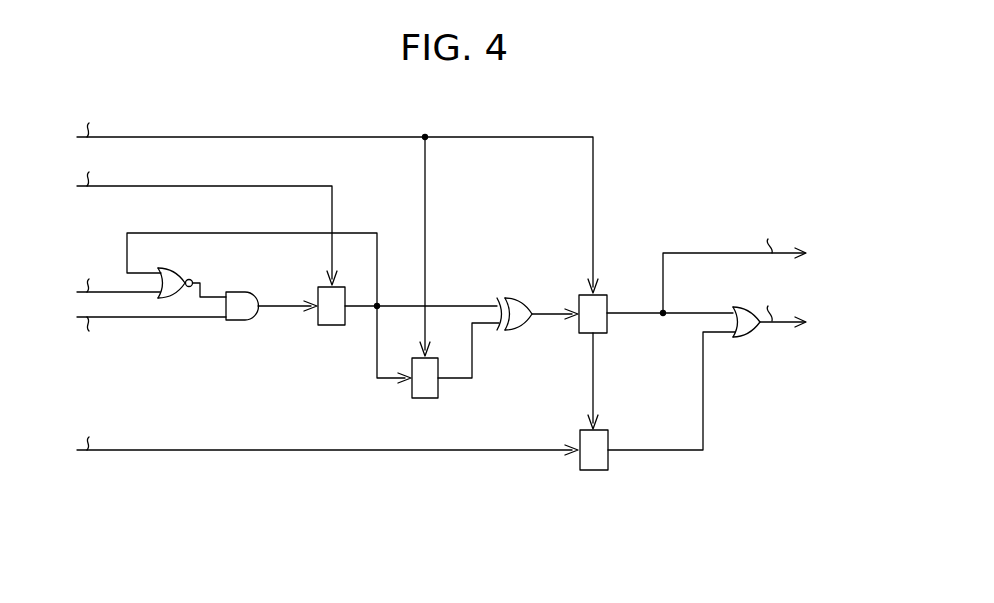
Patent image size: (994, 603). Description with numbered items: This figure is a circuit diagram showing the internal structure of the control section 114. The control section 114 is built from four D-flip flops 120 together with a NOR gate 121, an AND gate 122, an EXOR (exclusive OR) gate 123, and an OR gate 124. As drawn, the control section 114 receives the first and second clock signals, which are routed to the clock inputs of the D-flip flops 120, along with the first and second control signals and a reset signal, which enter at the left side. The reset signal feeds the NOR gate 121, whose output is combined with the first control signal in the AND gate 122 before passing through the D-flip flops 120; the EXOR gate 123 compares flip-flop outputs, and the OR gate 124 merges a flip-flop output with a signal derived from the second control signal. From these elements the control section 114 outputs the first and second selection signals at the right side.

The control section 114 is at (710, 103).
The D-flip flops 120 is at (330, 325).
The NOR gate 121 is at (183, 271).
The AND gate 122 is at (238, 321).
The EXOR gate 123 is at (513, 297).
The OR gate 124 is at (747, 339).